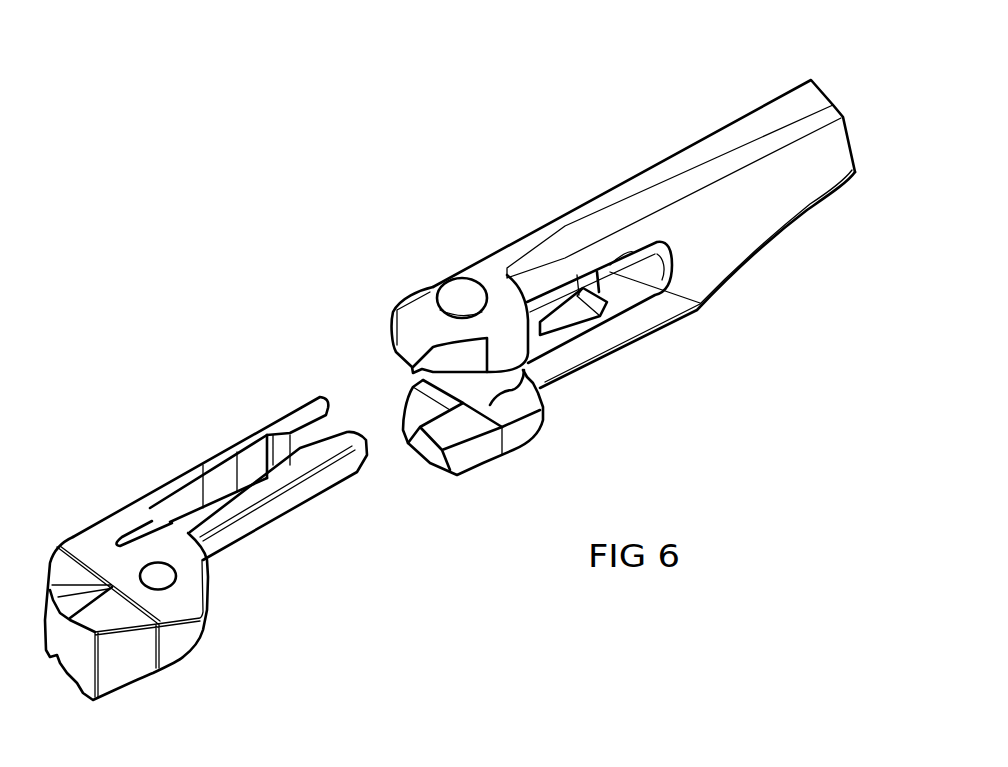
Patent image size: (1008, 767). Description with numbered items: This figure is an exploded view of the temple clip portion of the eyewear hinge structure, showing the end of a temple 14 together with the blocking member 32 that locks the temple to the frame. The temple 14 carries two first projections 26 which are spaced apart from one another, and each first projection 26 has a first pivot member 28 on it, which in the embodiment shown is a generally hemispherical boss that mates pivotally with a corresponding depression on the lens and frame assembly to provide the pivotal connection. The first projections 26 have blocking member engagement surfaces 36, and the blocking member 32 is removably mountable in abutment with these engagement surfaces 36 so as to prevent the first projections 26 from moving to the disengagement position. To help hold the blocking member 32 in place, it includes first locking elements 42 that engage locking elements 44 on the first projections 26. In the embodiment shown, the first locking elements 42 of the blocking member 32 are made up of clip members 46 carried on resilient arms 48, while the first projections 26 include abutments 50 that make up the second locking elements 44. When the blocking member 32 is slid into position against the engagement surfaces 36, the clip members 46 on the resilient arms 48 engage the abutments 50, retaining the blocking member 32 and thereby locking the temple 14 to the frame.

The temple 14 is at (728, 148).
The first projection 26 is at (552, 220).
The first pivot member 28 is at (443, 278).
The blocking member 32 is at (251, 475).
The blocking member engagement surface 36 is at (513, 387).
The first locking element 42 is at (287, 468).
The locking element 44 is at (712, 330).
The clip member 46 is at (282, 427).
The resilient arm 48 is at (205, 463).
The abutment 50 is at (612, 276).